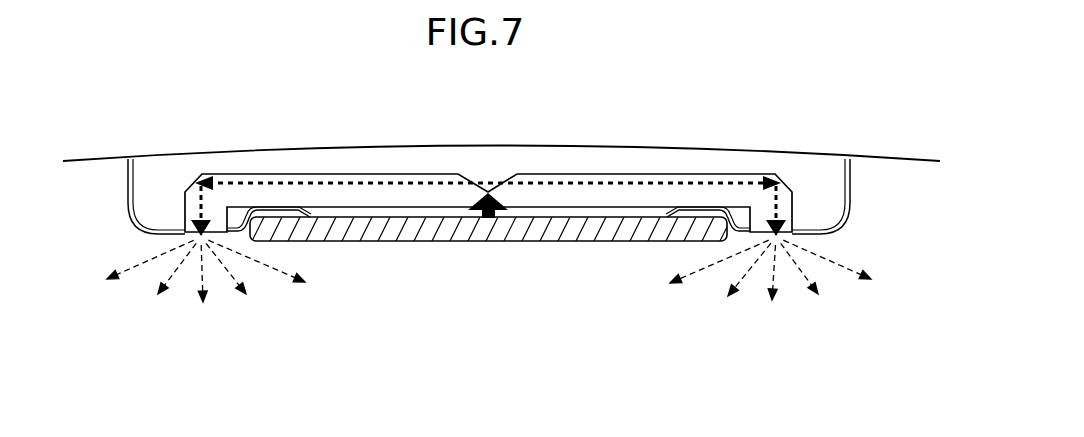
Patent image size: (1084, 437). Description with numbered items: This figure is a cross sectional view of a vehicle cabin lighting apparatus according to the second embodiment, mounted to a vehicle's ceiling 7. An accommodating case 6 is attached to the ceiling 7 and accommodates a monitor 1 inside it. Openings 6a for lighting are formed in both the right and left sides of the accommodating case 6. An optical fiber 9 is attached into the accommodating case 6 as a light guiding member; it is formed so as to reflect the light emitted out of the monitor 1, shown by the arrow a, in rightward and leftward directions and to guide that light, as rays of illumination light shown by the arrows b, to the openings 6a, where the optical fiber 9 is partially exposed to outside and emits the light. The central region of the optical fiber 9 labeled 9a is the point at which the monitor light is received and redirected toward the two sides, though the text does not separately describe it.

The monitor 1 is at (402, 243).
The accommodating case 6 is at (130, 208).
The openings for lighting 6a is at (192, 238).
The vehicle's ceiling 7 is at (402, 147).
The optical fiber 9 is at (598, 197).
The hole 9a is at (475, 180).
The arrow showing light emitted from the monitor a is at (498, 198).
The arrows showing rays of illumination light b is at (646, 172).